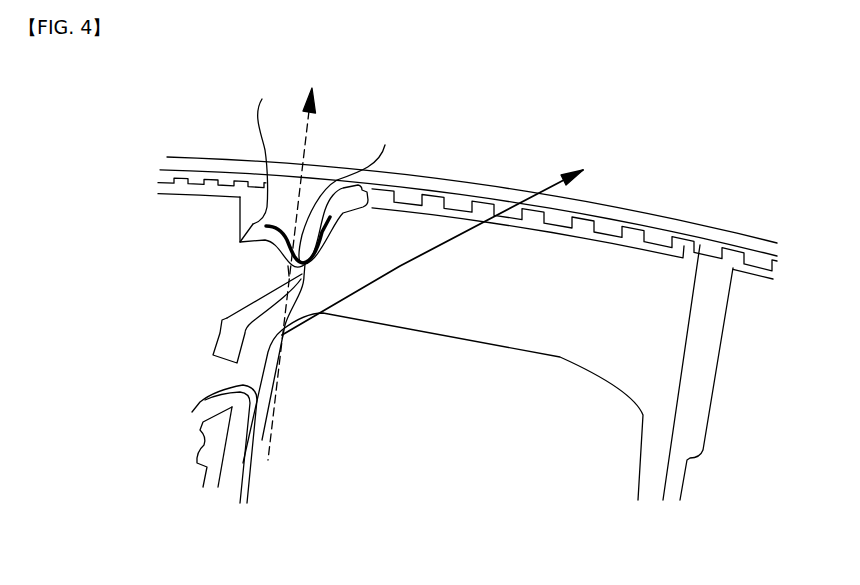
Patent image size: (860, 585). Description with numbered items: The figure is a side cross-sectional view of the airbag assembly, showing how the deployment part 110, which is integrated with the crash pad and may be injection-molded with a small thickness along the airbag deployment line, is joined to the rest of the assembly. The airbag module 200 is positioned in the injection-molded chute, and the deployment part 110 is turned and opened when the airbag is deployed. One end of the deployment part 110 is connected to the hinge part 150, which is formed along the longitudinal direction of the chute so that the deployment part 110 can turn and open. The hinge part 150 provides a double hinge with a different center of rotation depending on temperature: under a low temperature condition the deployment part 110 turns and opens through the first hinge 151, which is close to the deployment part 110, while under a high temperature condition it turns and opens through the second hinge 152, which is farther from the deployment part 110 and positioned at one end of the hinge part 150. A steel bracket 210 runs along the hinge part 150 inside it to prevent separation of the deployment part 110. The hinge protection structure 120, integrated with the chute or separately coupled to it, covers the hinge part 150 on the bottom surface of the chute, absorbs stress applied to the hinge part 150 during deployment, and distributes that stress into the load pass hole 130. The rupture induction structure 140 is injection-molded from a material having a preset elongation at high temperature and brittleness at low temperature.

The deployment part 110 is at (578, 228).
The hinge protection structure 120 is at (232, 336).
The load pass hole 130 is at (238, 283).
The rupture induction structure 140 is at (307, 268).
The hinge part 150 is at (403, 127).
The first hinge 151 is at (351, 193).
The second hinge 152 is at (265, 151).
The airbag module 200 is at (643, 413).
The steel bracket 210 is at (327, 227).